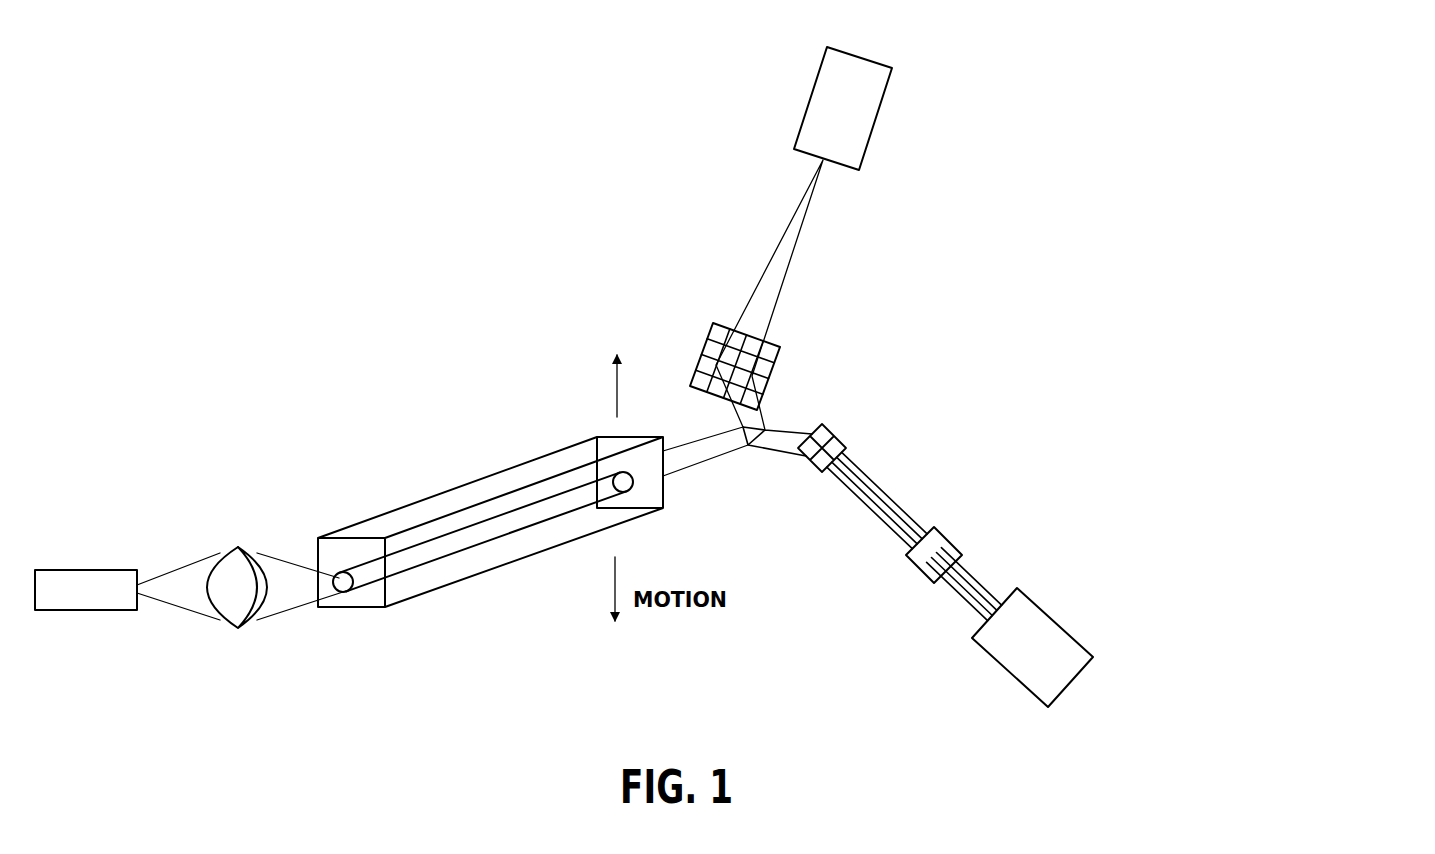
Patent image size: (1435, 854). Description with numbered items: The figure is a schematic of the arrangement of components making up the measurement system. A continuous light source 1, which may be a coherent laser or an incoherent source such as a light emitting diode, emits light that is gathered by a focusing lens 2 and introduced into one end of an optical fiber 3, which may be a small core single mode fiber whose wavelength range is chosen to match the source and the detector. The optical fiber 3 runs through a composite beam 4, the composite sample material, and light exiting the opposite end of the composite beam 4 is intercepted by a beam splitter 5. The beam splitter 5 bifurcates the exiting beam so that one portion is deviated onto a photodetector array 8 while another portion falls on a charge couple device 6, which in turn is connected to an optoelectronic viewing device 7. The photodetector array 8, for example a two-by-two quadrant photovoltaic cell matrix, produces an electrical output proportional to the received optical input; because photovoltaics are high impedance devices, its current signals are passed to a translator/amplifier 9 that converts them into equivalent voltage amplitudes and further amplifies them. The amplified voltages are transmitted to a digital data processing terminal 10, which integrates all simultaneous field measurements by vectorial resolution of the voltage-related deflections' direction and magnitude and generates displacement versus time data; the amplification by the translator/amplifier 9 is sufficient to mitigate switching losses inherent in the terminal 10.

The light source 1 is at (60, 614).
The focusing lens 2 is at (220, 547).
The optical fiber 3 is at (447, 532).
The composite beam 4 is at (450, 602).
The beam splitter 5 is at (750, 451).
The charge couple device (CCD) 6 is at (710, 327).
The optoelectronic viewing device 7 is at (881, 122).
The photodetector array 8 is at (834, 427).
The translator/amplifier 9 is at (960, 538).
The digital data processing terminal 10 is at (1087, 648).